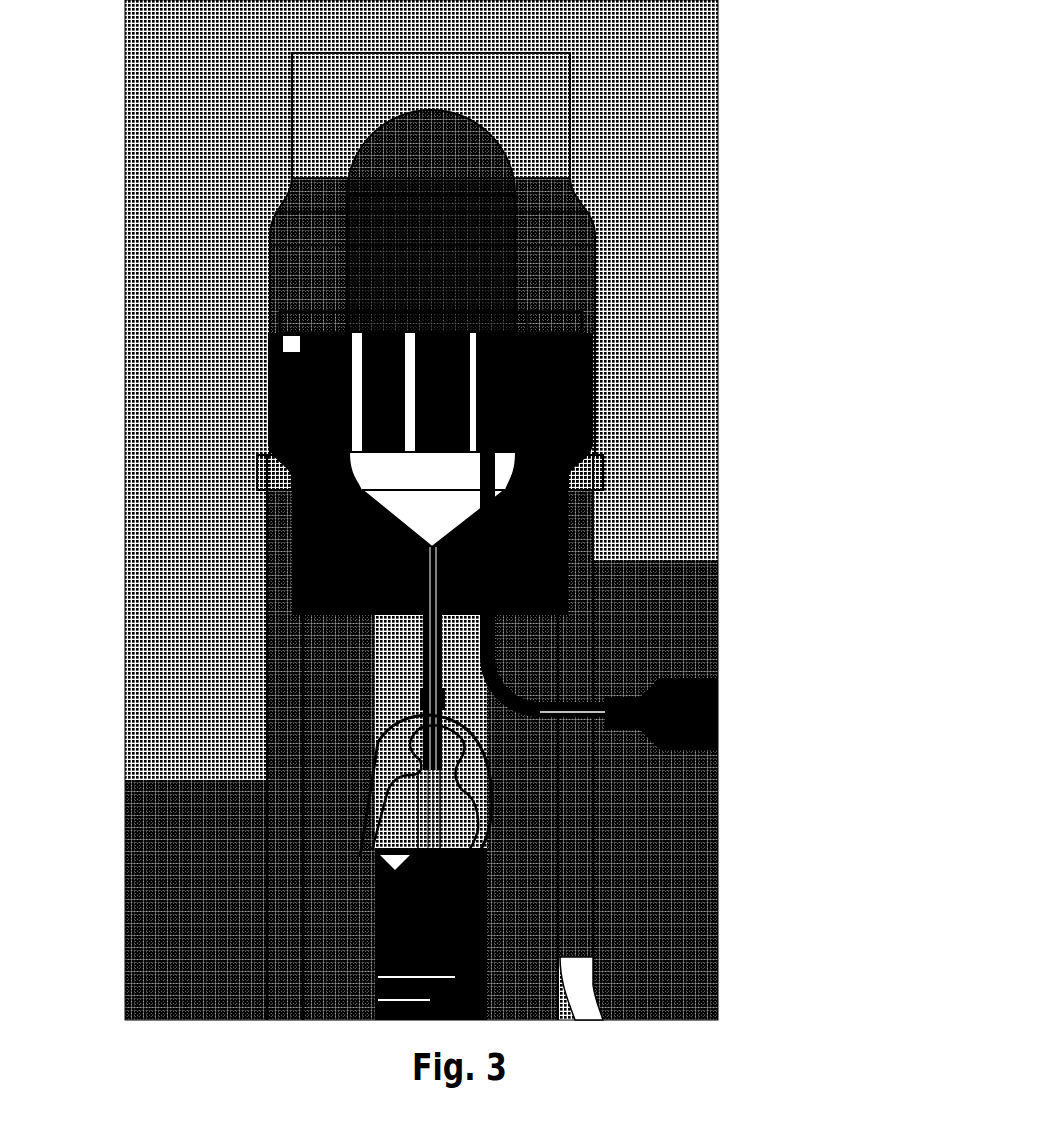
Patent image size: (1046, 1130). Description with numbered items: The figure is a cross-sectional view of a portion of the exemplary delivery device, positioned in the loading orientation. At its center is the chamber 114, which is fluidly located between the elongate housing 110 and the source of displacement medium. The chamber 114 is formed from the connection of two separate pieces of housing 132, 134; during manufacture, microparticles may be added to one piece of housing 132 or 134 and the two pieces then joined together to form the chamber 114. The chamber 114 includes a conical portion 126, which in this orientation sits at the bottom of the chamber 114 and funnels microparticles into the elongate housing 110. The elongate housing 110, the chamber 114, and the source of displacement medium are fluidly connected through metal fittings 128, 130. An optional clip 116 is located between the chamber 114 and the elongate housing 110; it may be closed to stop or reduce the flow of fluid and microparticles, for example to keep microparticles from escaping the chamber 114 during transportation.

The elongate housing 110 is at (435, 935).
The chamber 114 is at (517, 255).
The clip 116 is at (370, 793).
The conical portion 126 is at (402, 517).
The metal fitting 128 is at (437, 668).
The metal fitting 130 is at (497, 577).
The piece of housing 132 is at (538, 100).
The piece of housing 134 is at (568, 415).